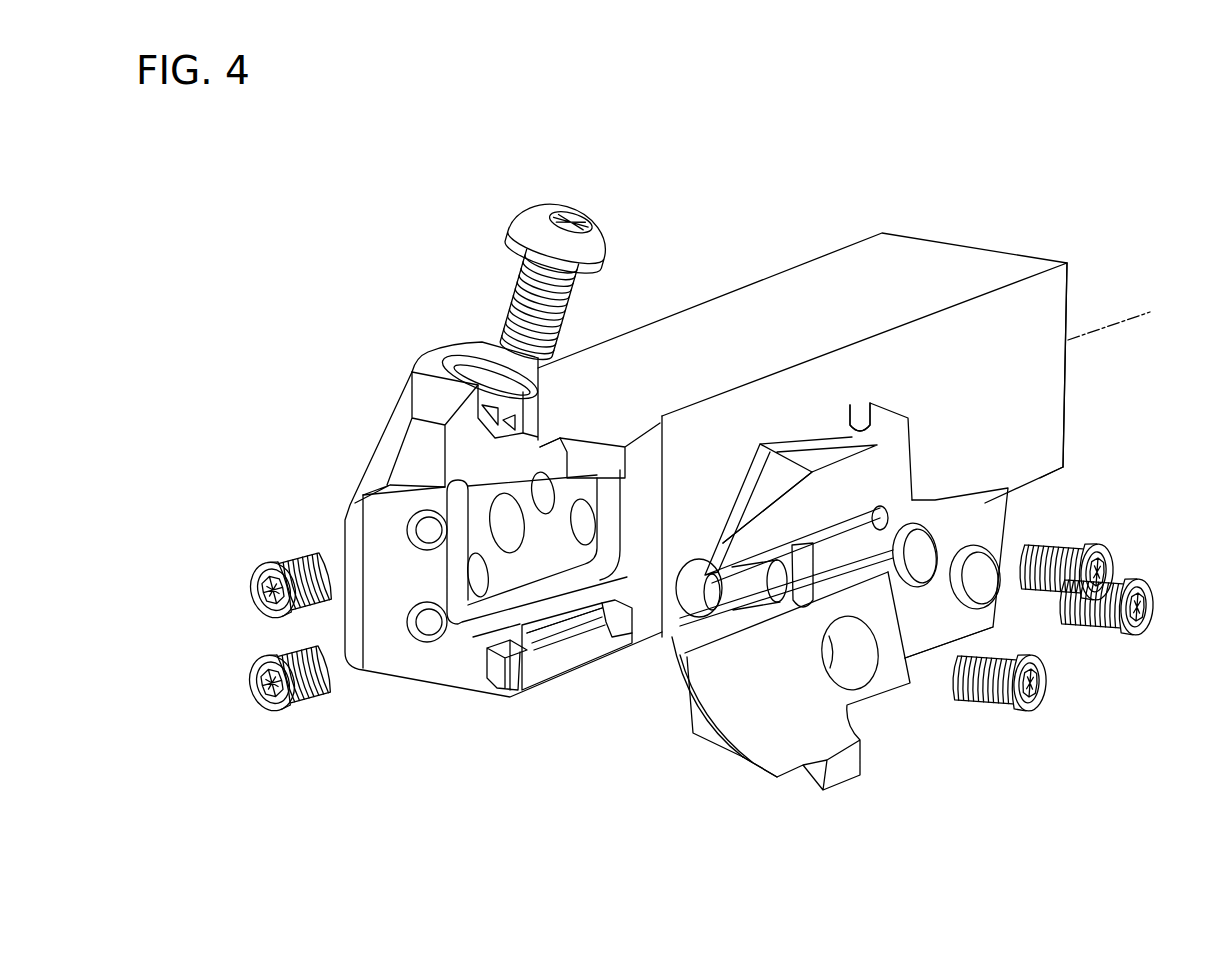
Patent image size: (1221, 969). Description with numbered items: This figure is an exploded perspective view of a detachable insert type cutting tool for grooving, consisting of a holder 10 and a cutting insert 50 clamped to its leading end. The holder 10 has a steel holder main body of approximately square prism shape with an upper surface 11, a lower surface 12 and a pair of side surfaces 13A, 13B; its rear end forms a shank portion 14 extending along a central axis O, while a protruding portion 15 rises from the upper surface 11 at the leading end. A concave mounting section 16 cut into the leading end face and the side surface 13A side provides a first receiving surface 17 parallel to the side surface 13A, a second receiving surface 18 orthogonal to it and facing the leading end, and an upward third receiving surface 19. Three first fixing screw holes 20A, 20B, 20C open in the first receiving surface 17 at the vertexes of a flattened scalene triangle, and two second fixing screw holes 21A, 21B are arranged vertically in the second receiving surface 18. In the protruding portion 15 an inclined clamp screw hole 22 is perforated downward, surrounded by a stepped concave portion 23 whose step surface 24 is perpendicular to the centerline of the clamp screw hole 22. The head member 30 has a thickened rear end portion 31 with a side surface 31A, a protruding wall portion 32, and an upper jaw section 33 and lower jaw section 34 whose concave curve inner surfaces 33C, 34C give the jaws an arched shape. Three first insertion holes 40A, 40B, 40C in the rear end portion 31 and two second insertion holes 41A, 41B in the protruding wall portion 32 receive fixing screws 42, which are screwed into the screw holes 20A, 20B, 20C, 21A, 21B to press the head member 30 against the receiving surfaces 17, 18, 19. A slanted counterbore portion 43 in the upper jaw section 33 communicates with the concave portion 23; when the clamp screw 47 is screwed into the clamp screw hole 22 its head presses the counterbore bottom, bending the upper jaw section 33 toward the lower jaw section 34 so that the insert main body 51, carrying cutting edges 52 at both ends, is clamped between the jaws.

The holder 10 is at (810, 376).
The upper surface 11 is at (810, 399).
The lower surface 12 is at (1042, 468).
The side surface 13A is at (1040, 420).
The side surface 13B is at (755, 312).
The shank portion 14 is at (1040, 311).
The central axis O is at (1135, 318).
The protruding portion 15 is at (475, 493).
The mounting section 16 is at (572, 440).
The first receiving surface 17 is at (574, 434).
The second receiving surface 18 is at (383, 537).
The third receiving surface 19 is at (573, 596).
The first fixing screw hole 20A is at (481, 575).
The first fixing screw hole 20B is at (540, 493).
The first fixing screw hole 20C is at (583, 518).
The second fixing screw hole 21A is at (427, 530).
The second fixing screw hole 21B is at (422, 630).
The clamp screw hole 22 is at (505, 425).
The concave portion 23 is at (488, 358).
The step surface 24 is at (463, 370).
The head member 30 is at (834, 544).
The rear end portion 31 is at (983, 581).
The side surface 31A is at (918, 645).
The protruding wall portion 32 is at (672, 692).
The upper jaw section 33 is at (799, 471).
The concave curve inner surface 33C is at (808, 503).
The lower jaw section 34 is at (821, 705).
The concave curve inner surface 34C is at (748, 737).
The first insertion hole 40A is at (848, 650).
The first insertion hole 40B is at (918, 553).
The first insertion hole 40C is at (975, 577).
The second insertion hole 41A is at (700, 578).
The second insertion hole 41B is at (688, 665).
The fixing screw 42 is at (262, 685).
The counterbore portion 43 is at (854, 414).
The clamp screw 47 is at (532, 215).
The cutting insert 50 is at (520, 697).
The insert main body 51 is at (565, 658).
The cutting edge 52 is at (607, 605).